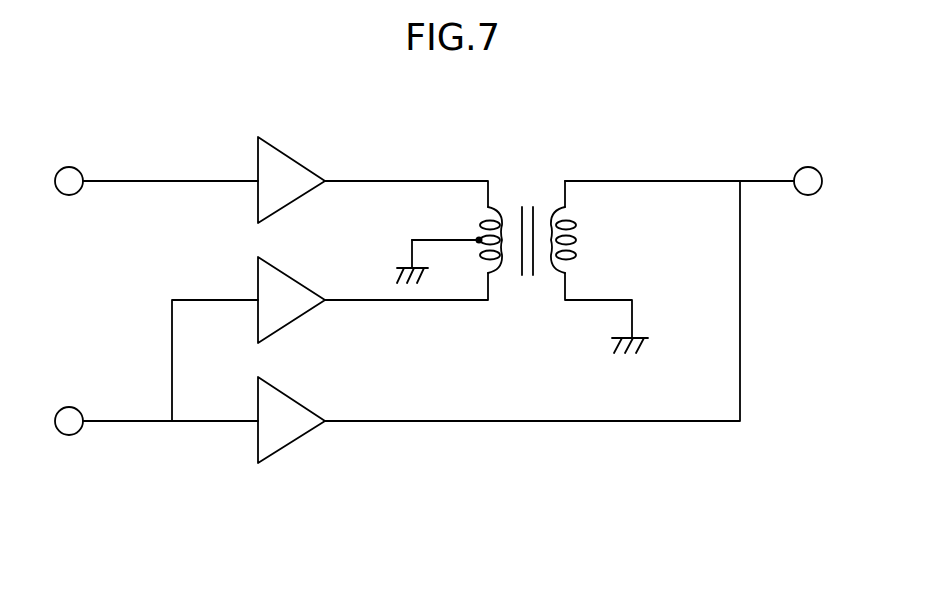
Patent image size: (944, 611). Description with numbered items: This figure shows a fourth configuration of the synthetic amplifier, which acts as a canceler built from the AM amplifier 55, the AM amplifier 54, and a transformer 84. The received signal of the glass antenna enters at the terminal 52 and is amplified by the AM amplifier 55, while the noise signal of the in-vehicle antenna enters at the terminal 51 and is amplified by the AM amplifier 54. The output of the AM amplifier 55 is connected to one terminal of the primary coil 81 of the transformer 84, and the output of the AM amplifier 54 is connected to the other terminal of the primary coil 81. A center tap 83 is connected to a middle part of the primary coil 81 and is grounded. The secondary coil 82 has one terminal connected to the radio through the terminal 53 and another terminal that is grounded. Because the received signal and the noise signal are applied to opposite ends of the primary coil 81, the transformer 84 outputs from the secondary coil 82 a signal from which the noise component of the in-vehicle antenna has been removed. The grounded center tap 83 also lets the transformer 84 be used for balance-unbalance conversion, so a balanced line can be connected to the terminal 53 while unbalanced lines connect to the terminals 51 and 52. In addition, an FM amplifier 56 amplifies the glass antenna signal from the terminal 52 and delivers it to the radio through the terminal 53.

The terminal 51 is at (79, 170).
The terminal 52 is at (79, 410).
The terminal 53 is at (815, 169).
The AM amplifier 54 is at (279, 150).
The AM amplifier 55 is at (281, 331).
The FM amplifier 56 is at (281, 451).
The primary coil 81 is at (480, 225).
The secondary coil 82 is at (577, 225).
The center tap 83 is at (477, 245).
The transformer 84 is at (575, 170).